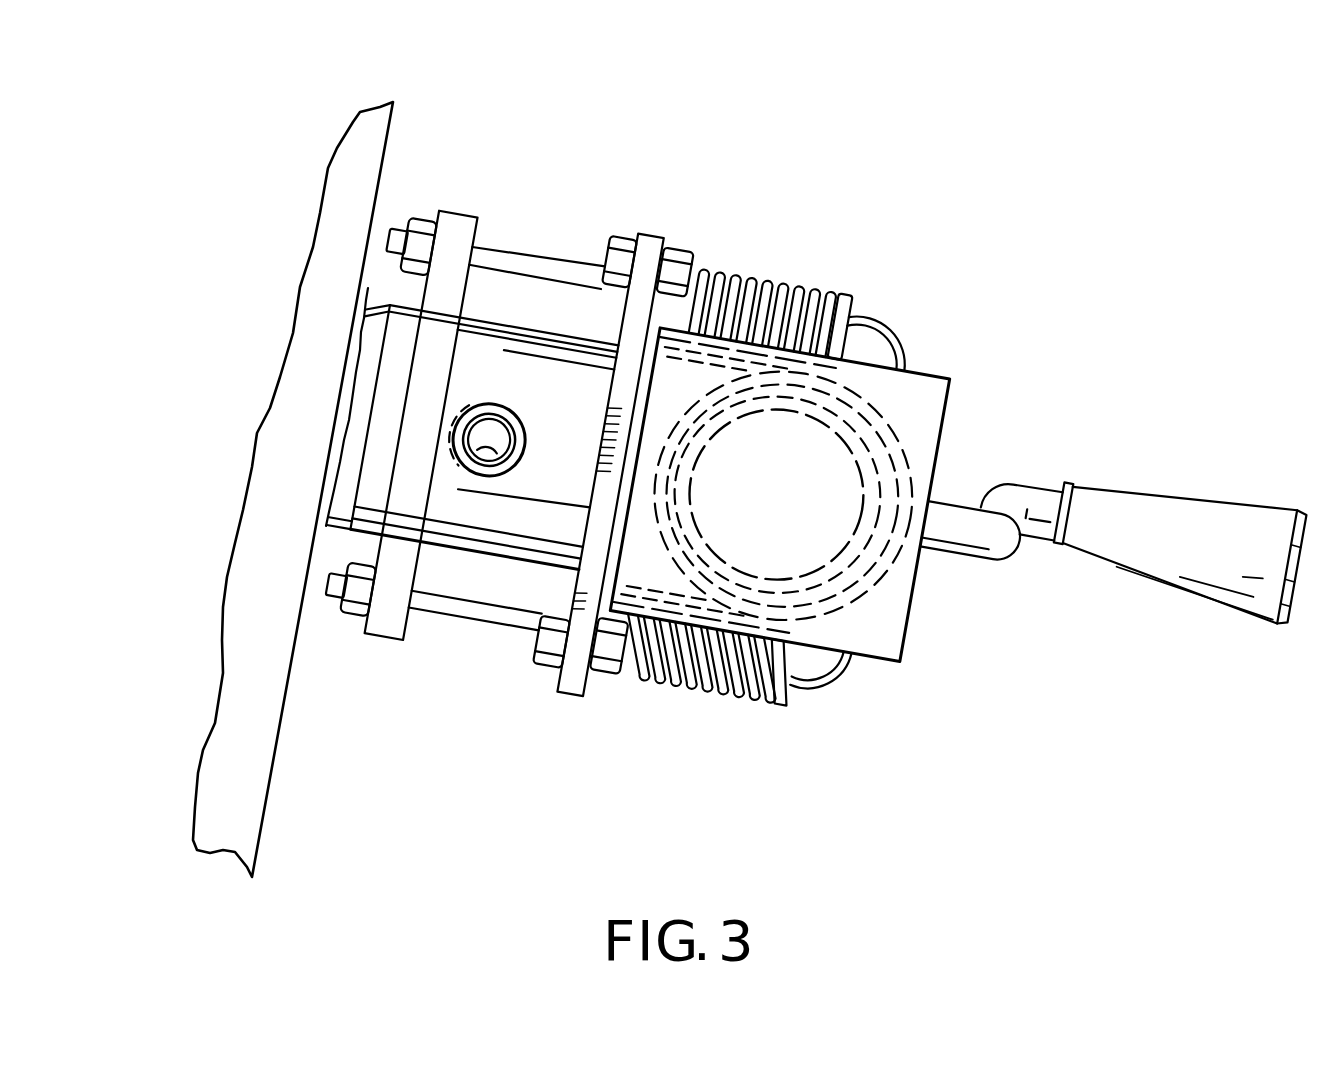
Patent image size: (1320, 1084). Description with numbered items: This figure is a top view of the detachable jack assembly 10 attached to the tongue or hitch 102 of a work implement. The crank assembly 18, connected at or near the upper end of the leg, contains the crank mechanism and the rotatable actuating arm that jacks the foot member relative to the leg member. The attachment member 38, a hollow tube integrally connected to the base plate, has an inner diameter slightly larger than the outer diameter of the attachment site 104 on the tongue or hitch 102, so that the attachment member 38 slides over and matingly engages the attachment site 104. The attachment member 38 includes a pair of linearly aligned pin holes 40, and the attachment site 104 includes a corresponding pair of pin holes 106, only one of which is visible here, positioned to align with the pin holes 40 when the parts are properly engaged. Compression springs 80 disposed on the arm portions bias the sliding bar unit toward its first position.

The jack assembly 10 is at (808, 473).
The crank assembly 18 is at (924, 428).
The attachment member 38 is at (500, 533).
The pin holes 40 is at (497, 405).
The compression spring 80 is at (786, 284).
The tongue or hitch 102 is at (337, 167).
The attachment site 104 is at (353, 425).
The pin holes 106 is at (515, 413).